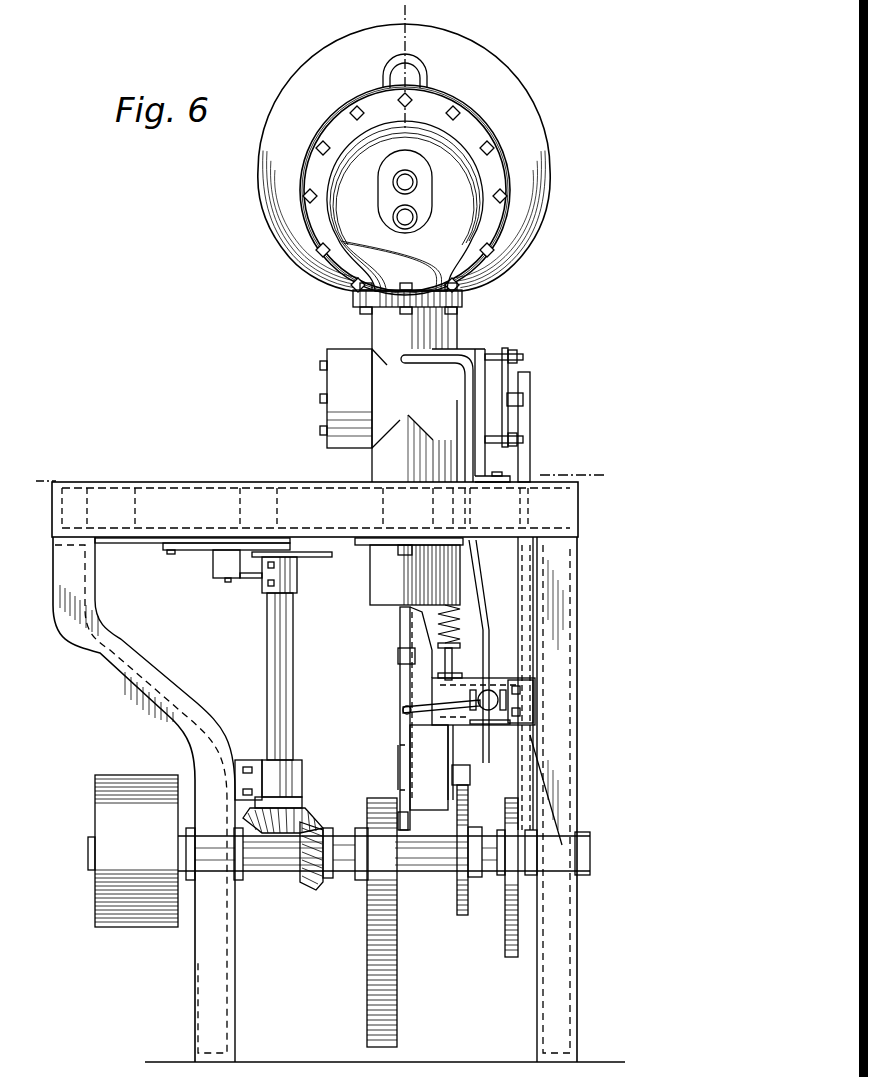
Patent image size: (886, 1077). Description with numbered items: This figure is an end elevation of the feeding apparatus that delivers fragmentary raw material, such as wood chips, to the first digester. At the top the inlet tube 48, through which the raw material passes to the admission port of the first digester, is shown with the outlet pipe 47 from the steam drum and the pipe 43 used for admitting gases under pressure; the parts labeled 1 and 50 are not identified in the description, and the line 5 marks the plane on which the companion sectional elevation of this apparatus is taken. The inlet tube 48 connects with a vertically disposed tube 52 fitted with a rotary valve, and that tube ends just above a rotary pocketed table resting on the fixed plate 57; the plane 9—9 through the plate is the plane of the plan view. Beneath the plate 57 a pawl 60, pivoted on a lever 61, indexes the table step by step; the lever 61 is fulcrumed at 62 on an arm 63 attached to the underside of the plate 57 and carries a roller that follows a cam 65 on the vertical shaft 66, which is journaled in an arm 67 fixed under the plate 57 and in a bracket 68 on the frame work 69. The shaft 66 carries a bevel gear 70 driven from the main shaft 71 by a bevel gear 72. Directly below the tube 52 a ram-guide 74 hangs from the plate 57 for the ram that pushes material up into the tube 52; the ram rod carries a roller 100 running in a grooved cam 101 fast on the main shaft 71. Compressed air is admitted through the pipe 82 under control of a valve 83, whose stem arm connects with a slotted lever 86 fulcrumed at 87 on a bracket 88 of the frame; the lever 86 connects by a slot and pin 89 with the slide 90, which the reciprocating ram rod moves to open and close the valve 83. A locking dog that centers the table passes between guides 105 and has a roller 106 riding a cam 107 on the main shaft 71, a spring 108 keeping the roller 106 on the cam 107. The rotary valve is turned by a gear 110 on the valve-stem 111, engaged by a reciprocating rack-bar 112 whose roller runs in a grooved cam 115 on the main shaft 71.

The casing 1 is at (404, 157).
The section line 5 is at (378, 15).
The plane 9— 9 is at (29, 460).
The pipe 43 is at (393, 218).
The outlet pipe 47 is at (393, 182).
The inlet tube 48 is at (405, 206).
The flange ring 50 is at (405, 190).
The vertically-disposed tube 52 is at (385, 462).
The fixed plate 57 is at (315, 509).
The pawl 60 is at (152, 543).
The lever 61 is at (192, 550).
The fulcrum 62 is at (226, 582).
The arm 63 is at (250, 578).
The cam 65 is at (318, 557).
The vertical shaft 66 is at (294, 650).
The arm 67 is at (292, 585).
The bracket 68 is at (253, 768).
The frame work 69 is at (568, 748).
The bevel gear 70 is at (302, 808).
The main shaft 71 is at (428, 872).
The bevel gear 72 is at (320, 824).
The ram-guide 74 is at (380, 598).
The pipe 82 is at (466, 388).
The valve 83 is at (490, 690).
The slotted lever 86 is at (422, 725).
The fulcrum 87 is at (445, 700).
The bracket 88 is at (526, 705).
The slot and pin 89 is at (403, 710).
The slide 90 is at (399, 673).
The roller 100 is at (400, 830).
The grooved cam 101 is at (367, 960).
The guides 105 is at (470, 762).
The roller 106 is at (470, 778).
The cam 107 is at (460, 898).
The spring 108 is at (458, 628).
The gear 110 is at (530, 400).
The valve-stem 111 is at (512, 390).
The rack-bar 112 is at (530, 430).
The grooved cam 115 is at (505, 930).